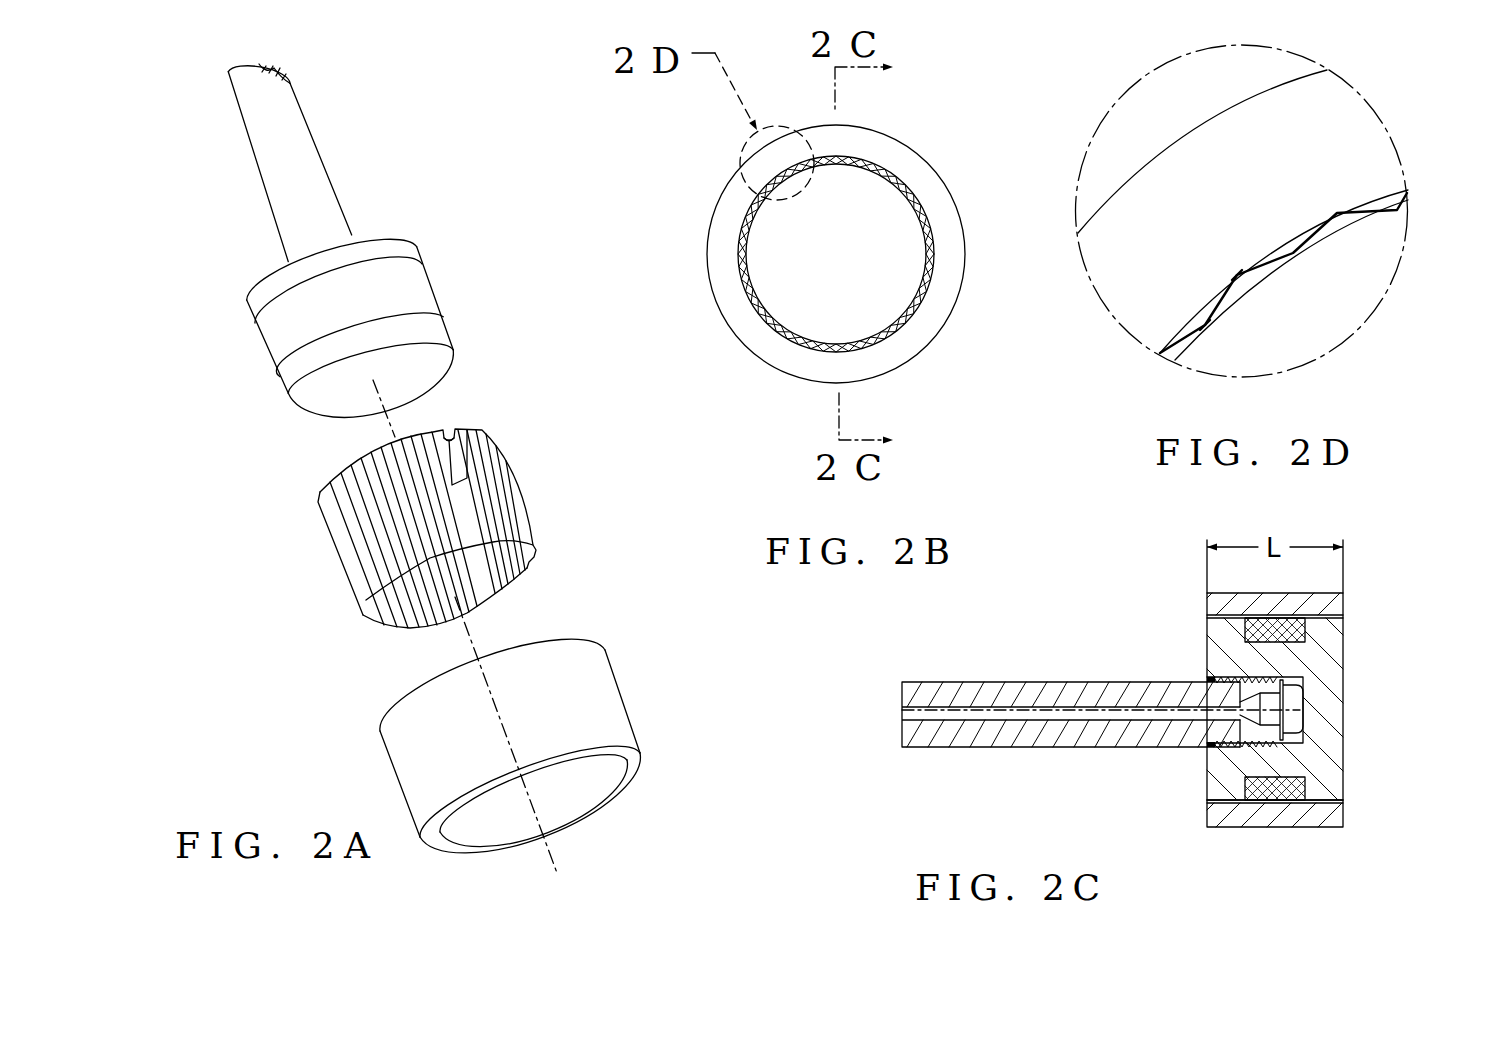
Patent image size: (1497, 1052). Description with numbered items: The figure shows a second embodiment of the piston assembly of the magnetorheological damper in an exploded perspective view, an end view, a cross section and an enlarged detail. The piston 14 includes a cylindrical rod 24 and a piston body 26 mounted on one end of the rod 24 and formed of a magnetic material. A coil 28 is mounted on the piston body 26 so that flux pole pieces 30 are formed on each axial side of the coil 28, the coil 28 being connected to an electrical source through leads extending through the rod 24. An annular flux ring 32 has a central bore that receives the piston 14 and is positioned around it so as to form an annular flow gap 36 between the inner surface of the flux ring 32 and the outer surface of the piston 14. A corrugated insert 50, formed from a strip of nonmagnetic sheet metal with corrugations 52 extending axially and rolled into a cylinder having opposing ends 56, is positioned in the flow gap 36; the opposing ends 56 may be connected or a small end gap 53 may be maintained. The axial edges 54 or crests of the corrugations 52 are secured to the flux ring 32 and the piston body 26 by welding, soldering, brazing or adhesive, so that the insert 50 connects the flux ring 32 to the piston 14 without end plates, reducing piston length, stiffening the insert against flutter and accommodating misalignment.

In FIG. 2A, the piston 14 is at (352, 337).
In FIG. 2A, the cylindrical rod 24 is at (298, 135).
In FIG. 2C, the cylindrical rod 24 is at (988, 687).
In FIG. 2C, the piston body 26 is at (1332, 643).
In FIG. 2D, the piston body 26 is at (1350, 287).
In FIG. 2C, the coil 28 is at (1272, 800).
In FIG. 2A, the flux pole pieces 30 is at (253, 308).
In FIG. 2A, the annular flux ring 32 is at (607, 692).
In FIG. 2B, the annular flux ring 32 is at (917, 333).
In FIG. 2C, the annular flux ring 32 is at (1232, 815).
In FIG. 2D, the annular flux ring 32 is at (1325, 85).
In FIG. 2C, the annular flow gap 36 is at (1322, 802).
In FIG. 2D, the annular flow gap 36 is at (1397, 203).
In FIG. 2A, the corrugated insert 50 is at (436, 510).
In FIG. 2B, the corrugated insert 50 is at (888, 168).
In FIG. 2A, the corrugations 52 is at (349, 569).
In FIG. 2D, the corrugations 52 is at (1340, 233).
In FIG. 2A, the end gap 53 is at (448, 457).
In FIG. 2D, the axial edges 54 is at (1200, 322).
In FIG. 2A, the opposing ends 56 is at (440, 435).